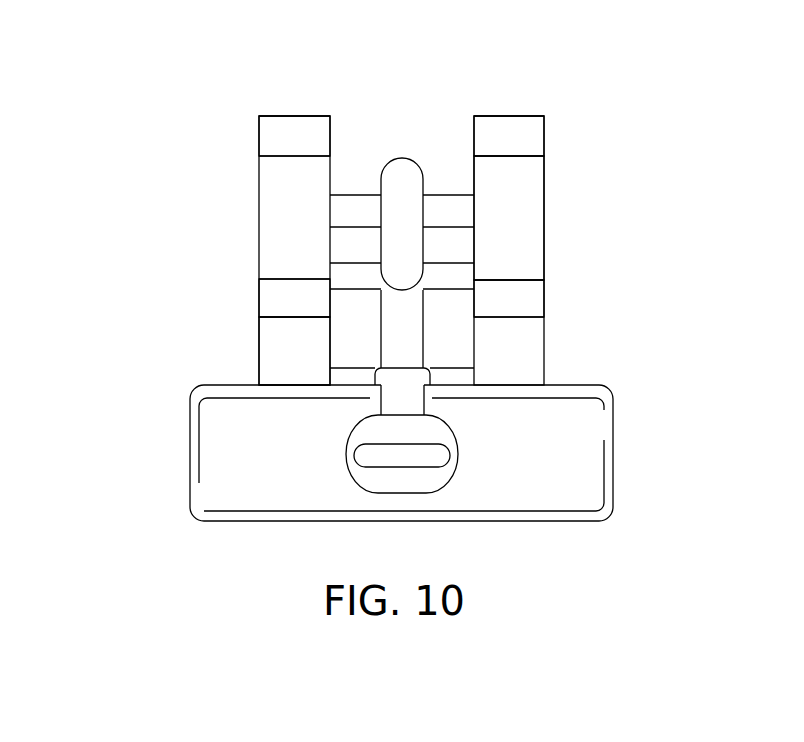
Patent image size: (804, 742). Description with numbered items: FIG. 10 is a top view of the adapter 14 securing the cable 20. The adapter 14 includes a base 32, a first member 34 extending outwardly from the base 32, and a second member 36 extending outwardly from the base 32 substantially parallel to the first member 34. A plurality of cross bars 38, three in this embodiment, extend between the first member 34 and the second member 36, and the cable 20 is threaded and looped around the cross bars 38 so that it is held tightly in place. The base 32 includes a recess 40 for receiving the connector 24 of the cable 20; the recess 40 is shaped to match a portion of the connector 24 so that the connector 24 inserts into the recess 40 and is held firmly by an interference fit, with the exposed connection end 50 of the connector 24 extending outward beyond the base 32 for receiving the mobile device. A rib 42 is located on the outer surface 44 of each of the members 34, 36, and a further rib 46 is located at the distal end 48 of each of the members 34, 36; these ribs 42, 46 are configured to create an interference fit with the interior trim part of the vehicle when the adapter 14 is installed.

The adapter 14 is at (128, 446).
The cable 20 is at (402, 168).
The connector 24 is at (380, 482).
The base 32 is at (580, 472).
The first member 34 is at (530, 198).
The second member 36 is at (280, 217).
The cross bars 38 is at (457, 380).
The recess 40 is at (453, 433).
The rib 42 is at (272, 298).
The outer surface 44 is at (270, 352).
The rib 46 is at (268, 135).
The distal end 48 is at (301, 90).
The exposed connection end 50 is at (405, 453).